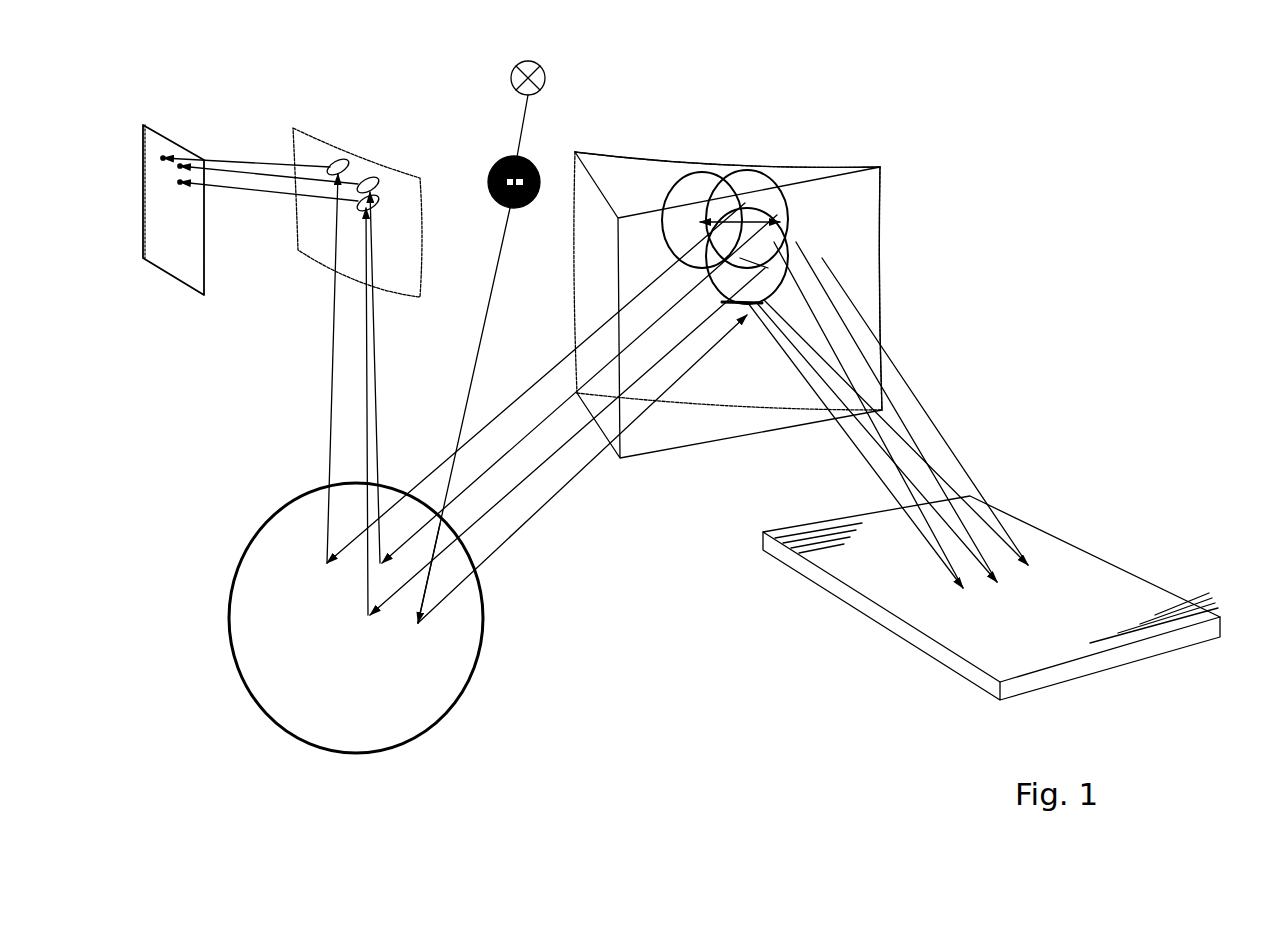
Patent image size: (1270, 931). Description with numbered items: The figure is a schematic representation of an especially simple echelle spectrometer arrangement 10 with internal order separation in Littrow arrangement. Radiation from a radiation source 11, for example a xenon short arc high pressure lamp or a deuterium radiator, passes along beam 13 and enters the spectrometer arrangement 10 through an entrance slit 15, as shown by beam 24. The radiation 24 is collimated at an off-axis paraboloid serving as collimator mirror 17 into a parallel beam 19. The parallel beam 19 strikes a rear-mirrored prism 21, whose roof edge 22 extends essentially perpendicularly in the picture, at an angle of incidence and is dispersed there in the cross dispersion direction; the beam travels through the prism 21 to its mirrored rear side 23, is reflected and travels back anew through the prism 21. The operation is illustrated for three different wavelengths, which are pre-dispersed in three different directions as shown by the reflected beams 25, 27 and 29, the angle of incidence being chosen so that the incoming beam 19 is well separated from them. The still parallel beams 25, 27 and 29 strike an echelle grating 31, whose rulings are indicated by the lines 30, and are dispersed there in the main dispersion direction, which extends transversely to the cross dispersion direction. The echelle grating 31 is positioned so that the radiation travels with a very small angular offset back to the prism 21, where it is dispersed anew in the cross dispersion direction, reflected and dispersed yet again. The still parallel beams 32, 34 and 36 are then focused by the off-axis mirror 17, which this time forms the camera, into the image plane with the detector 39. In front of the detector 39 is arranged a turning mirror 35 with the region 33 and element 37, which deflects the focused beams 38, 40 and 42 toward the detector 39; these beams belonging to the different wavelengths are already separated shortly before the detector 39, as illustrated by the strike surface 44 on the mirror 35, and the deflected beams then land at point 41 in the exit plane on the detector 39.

The spectrometer arrangement 10 is at (948, 82).
The radiation source 11 is at (530, 61).
The illumination light beam 13 is at (527, 122).
The entrance slit 15 is at (488, 172).
The collimator mirror 17 is at (340, 753).
The parallel beam 19 is at (505, 542).
The prism 21 is at (832, 262).
The roof edge 22 is at (883, 213).
The mirrored rear side 23 is at (802, 157).
The beam 24 is at (483, 342).
The reflected beam 25 is at (938, 473).
The reflected beam 27 is at (880, 440).
The reflected beam 29 is at (867, 457).
The lines 30 is at (1140, 617).
The echelle grating 31 is at (950, 668).
The parallel beam 32 is at (430, 590).
The lens arrangement 33 is at (694, 177).
The parallel beam 34 is at (472, 487).
The turning mirror 35 is at (310, 125).
The parallel beam 36 is at (510, 413).
The aperture 37 is at (339, 160).
The focused beam 38 is at (333, 320).
The detector 39 is at (165, 275).
The focused beam 40 is at (372, 460).
The detection point 41 is at (163, 155).
The focused beam 42 is at (371, 375).
The strike surface 44 is at (373, 178).